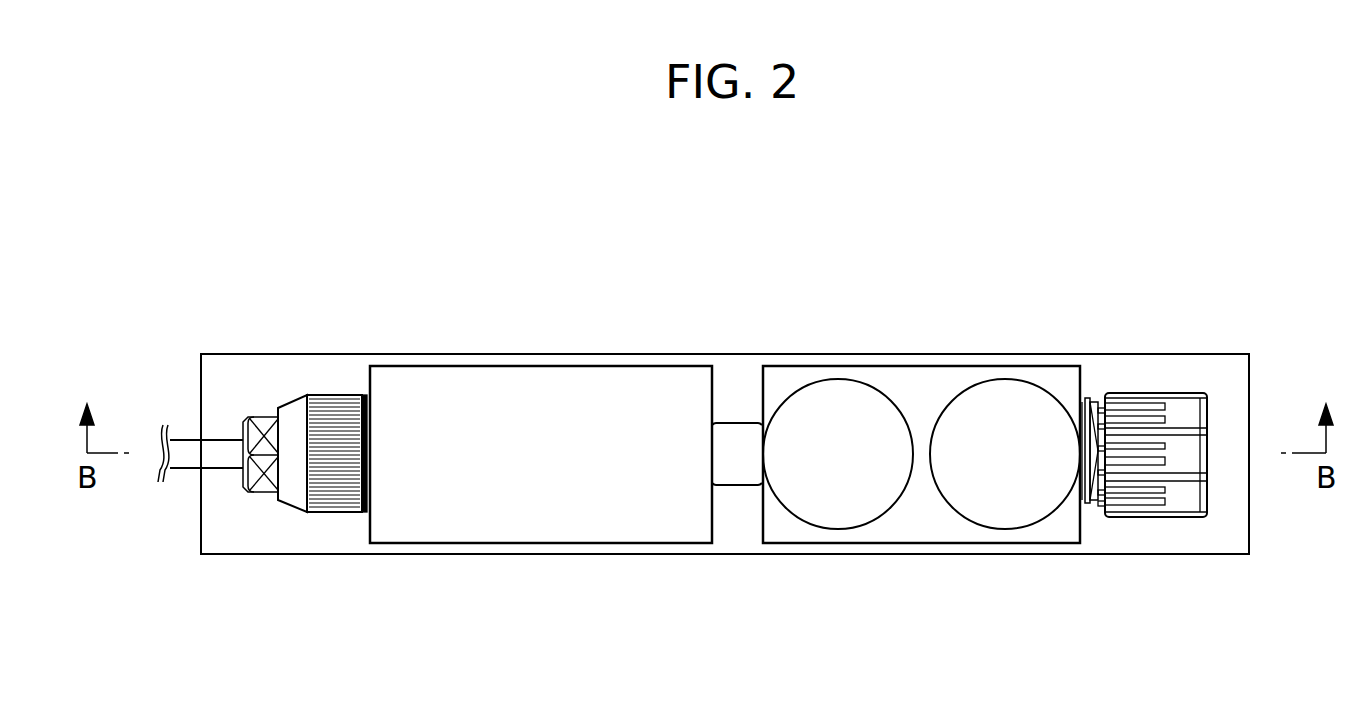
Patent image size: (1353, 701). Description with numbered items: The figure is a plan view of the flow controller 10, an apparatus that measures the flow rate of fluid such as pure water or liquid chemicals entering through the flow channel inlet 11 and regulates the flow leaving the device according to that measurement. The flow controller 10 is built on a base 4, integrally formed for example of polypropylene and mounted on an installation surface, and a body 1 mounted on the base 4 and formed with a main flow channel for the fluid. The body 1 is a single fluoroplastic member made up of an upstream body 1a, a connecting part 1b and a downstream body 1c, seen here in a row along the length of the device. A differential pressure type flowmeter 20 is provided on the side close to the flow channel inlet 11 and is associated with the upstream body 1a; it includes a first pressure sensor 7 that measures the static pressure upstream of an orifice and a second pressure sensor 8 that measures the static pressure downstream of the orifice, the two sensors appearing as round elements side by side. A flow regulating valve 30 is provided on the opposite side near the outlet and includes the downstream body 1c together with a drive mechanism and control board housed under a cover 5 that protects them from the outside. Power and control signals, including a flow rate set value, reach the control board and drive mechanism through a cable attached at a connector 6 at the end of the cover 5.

The flow controller 10 is at (880, 176).
The base 4 is at (245, 530).
The connector 6 is at (285, 395).
The flow regulating valve 30 is at (715, 333).
The cover 5 is at (408, 525).
The downstream body 1c is at (545, 512).
The connecting part 1b is at (738, 465).
The differential pressure type flowmeter 20 is at (1085, 338).
The upstream body 1a is at (928, 545).
The second pressure sensor 8 is at (812, 530).
The first pressure sensor 7 is at (1049, 518).
The body 1 is at (1083, 374).
The flow channel inlet 11 is at (1186, 393).